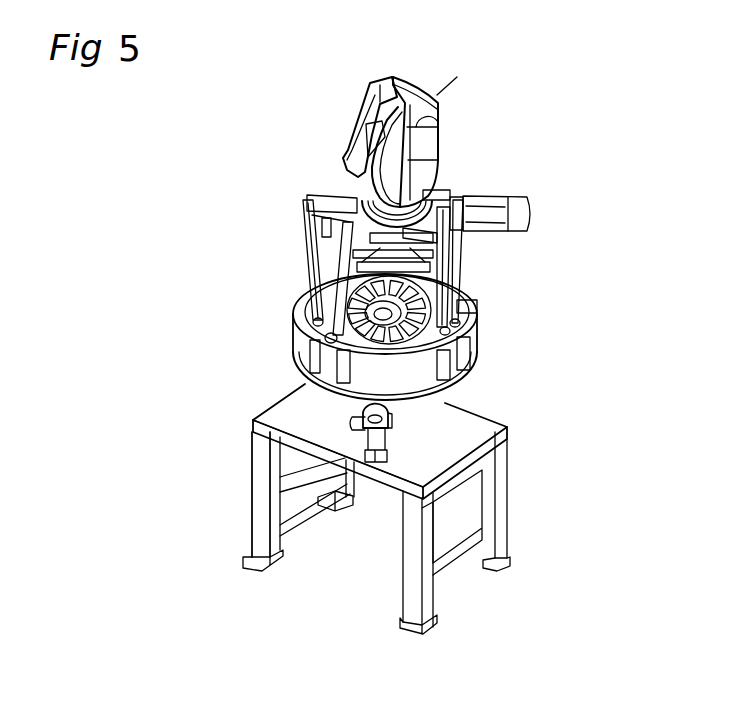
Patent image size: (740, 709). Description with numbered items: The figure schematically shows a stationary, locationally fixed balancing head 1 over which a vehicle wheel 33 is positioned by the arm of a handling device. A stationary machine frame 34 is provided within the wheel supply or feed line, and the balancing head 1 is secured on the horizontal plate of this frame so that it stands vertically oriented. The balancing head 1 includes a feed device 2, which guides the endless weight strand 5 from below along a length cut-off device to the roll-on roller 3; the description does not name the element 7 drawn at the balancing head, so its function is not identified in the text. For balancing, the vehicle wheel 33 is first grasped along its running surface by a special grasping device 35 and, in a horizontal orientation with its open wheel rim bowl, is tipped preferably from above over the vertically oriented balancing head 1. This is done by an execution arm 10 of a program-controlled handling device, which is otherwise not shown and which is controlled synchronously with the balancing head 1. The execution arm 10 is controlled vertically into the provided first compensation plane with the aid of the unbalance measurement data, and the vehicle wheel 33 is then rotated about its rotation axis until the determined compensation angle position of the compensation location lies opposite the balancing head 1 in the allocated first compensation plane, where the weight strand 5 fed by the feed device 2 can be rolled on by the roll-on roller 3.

The execution arm 10 is at (442, 93).
The grasping device 35 is at (450, 262).
The rotary disc with slots 7 is at (430, 293).
The vehicle wheel 33 is at (296, 341).
The endless weight strand 5 is at (440, 398).
The feed device 2 is at (392, 430).
The balancing head 1 is at (385, 449).
The roll-on roller 3 is at (253, 420).
The machine frame 34 is at (253, 520).